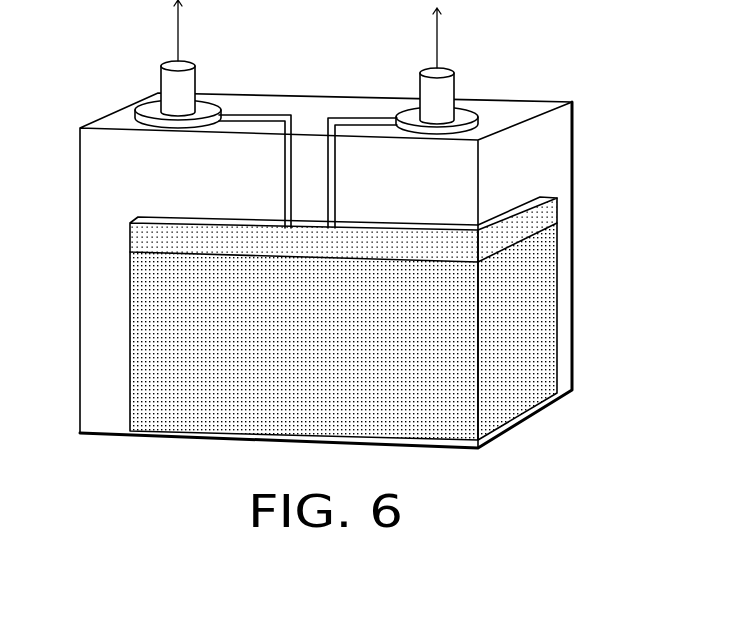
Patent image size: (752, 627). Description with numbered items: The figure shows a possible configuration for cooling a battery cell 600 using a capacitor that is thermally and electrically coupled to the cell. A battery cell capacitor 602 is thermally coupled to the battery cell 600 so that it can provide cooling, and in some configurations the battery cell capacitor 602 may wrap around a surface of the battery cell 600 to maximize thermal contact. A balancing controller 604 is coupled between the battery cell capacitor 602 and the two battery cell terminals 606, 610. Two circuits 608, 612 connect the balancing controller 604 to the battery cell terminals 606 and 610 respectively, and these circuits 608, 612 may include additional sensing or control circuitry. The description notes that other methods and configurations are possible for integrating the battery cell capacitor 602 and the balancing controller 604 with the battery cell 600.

The battery cell 600 is at (575, 167).
The battery cell capacitor 602 is at (522, 308).
The balancing controller 604 is at (523, 230).
The battery cell terminal 606 is at (456, 85).
The circuit 608 is at (367, 117).
The battery cell terminal 610 is at (160, 82).
The circuit 612 is at (253, 114).